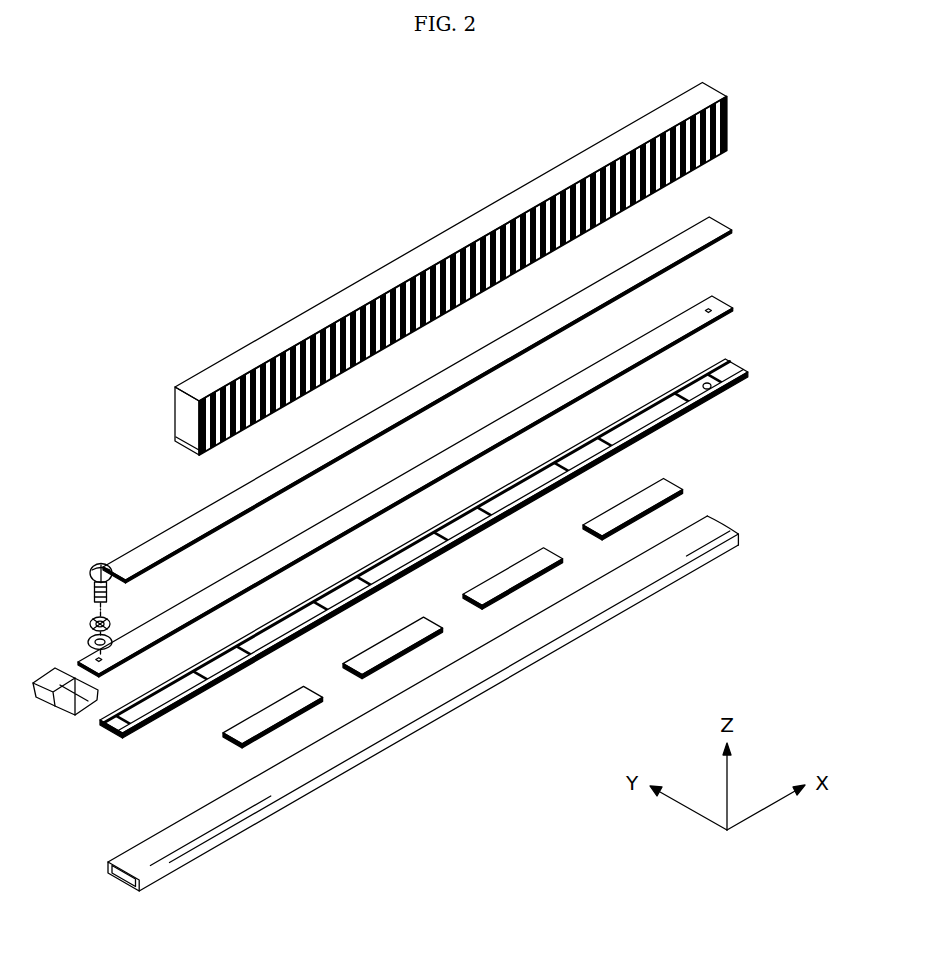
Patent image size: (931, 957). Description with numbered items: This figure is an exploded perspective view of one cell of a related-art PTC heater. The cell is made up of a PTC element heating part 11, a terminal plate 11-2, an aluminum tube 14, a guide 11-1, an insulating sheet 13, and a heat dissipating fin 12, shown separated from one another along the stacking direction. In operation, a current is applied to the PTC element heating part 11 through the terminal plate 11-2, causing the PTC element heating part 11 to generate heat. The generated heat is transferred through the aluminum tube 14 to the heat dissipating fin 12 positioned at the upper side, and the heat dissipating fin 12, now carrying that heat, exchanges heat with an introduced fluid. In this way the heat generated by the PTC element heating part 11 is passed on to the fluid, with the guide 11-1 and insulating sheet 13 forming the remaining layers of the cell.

The heat dissipating fin 12 is at (728, 112).
The insulating sheet 13 is at (715, 228).
The terminal plate 11-2 is at (720, 298).
The guide 11-1 is at (737, 368).
The PTC element heating part 11 is at (673, 487).
The aluminum tube 14 is at (712, 533).